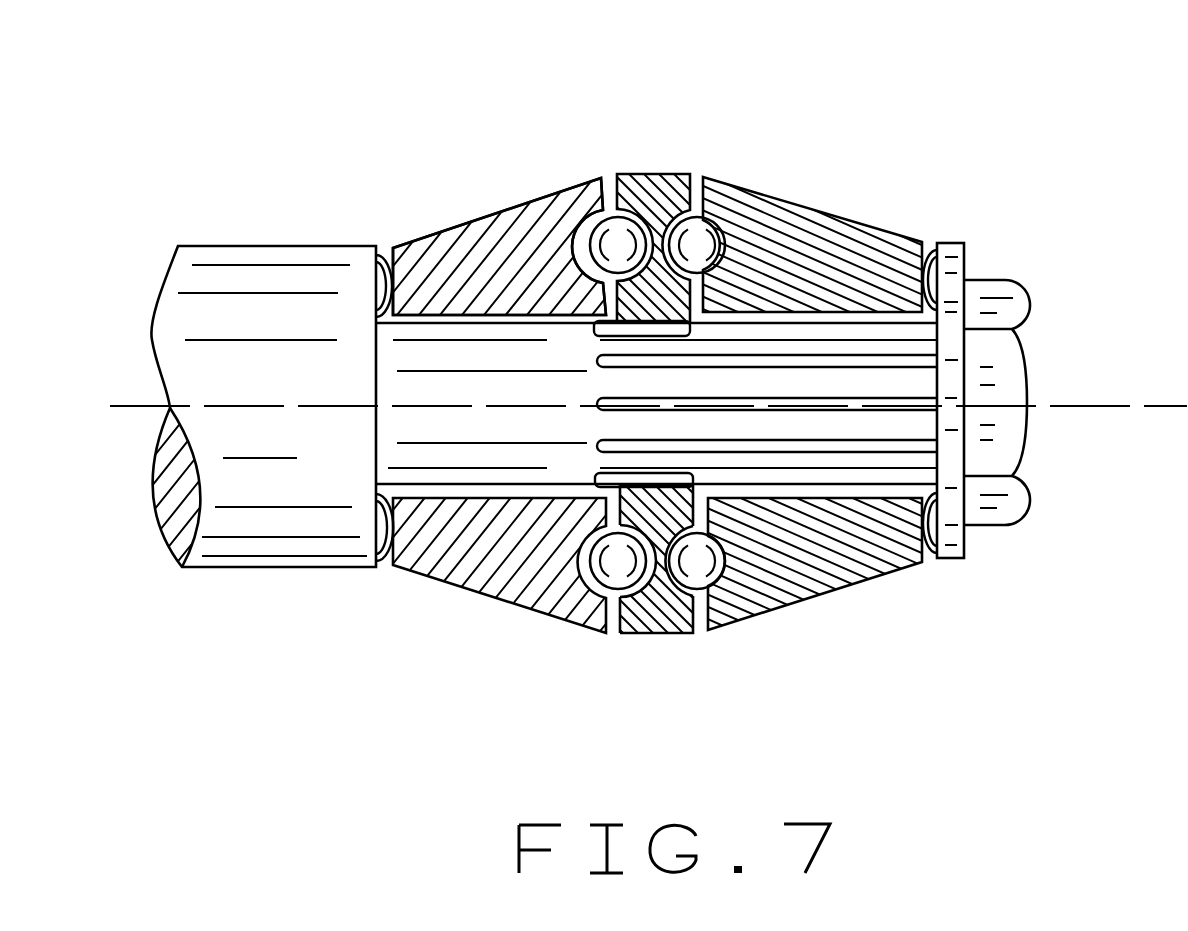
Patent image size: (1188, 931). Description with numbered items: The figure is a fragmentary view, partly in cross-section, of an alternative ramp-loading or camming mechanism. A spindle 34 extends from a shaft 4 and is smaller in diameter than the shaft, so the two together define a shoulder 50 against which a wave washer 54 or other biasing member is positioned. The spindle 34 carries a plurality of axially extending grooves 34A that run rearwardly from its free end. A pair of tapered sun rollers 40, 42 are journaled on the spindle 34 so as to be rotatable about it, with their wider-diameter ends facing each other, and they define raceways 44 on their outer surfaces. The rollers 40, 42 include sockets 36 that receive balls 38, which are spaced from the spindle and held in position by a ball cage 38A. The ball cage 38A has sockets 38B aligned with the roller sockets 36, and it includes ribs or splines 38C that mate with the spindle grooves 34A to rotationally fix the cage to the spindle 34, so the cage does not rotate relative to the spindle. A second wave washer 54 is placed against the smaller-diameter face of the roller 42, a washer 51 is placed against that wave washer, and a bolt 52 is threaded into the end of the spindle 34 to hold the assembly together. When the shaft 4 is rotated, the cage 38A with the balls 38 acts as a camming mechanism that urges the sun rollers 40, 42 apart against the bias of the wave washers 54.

The shaft 4 is at (255, 244).
The spindle 34 is at (449, 458).
The axially extending grooves 34A is at (863, 360).
The sockets 36 is at (602, 178).
The balls 38 is at (697, 245).
The ball cage 38A is at (622, 634).
The sockets 38B is at (669, 570).
The ribs or splines 38C is at (750, 489).
The sun roller 40 is at (594, 394).
The sun roller 42 is at (803, 209).
The raceways 44 is at (456, 227).
The shoulder 50 is at (398, 246).
The washer 51 is at (965, 262).
The bolt 52 is at (1027, 378).
The wave washer 54 is at (380, 250).